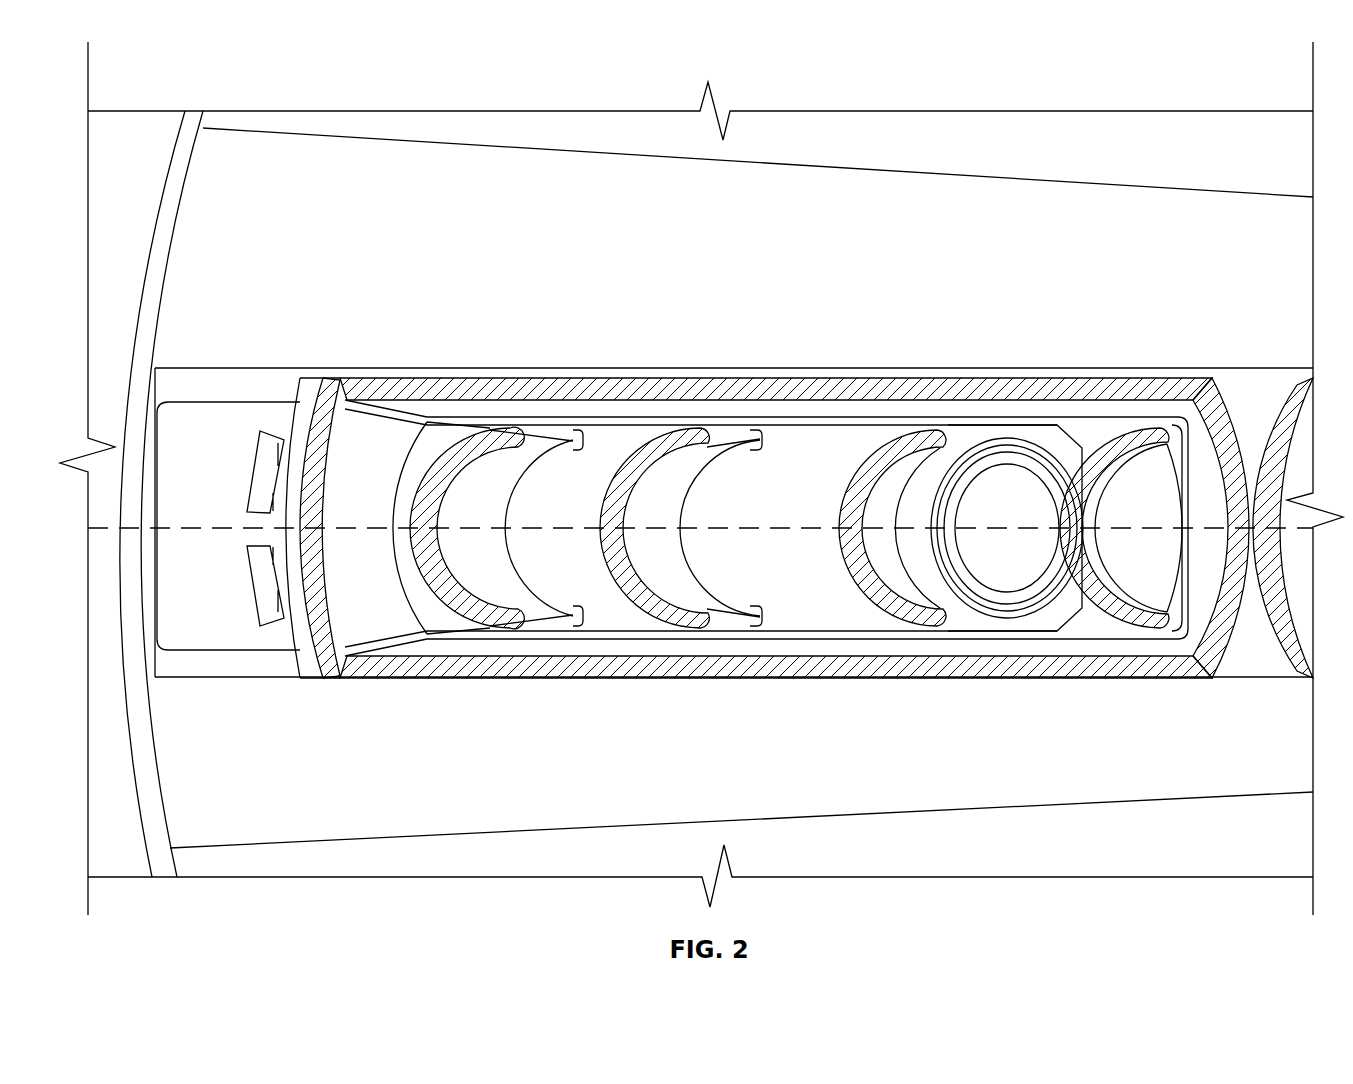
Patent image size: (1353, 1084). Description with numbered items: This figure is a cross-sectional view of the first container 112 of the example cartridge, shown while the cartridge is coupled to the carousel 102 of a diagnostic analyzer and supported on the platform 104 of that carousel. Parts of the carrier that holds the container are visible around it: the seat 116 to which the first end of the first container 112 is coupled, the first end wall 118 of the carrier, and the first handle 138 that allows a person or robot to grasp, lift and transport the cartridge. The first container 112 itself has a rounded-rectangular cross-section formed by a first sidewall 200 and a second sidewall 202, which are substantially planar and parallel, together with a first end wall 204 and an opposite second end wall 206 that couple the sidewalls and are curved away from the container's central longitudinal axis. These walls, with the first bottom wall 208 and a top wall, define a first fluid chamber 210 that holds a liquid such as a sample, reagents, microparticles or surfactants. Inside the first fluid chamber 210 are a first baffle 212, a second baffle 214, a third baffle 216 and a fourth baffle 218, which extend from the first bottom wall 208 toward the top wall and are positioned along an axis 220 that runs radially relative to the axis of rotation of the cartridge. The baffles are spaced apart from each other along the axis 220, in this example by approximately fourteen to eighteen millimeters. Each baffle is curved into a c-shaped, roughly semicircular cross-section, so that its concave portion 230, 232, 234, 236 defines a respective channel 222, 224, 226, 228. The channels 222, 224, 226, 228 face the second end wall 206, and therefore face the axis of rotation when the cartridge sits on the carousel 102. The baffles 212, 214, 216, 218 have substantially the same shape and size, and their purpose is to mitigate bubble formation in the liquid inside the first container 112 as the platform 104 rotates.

The carousel 102 is at (194, 118).
The platform 104 is at (722, 212).
The first container 112 is at (485, 355).
The seat 116 is at (1255, 650).
The first end wall 118 is at (307, 657).
The first handle 138 is at (232, 425).
The first sidewall 200 is at (668, 378).
The second sidewall 202 is at (760, 678).
The first end wall 204 is at (328, 412).
The second end wall 206 is at (1238, 420).
The first bottom wall 208 is at (775, 610).
The first fluid chamber 210 is at (808, 452).
The first baffle 212 is at (507, 623).
The second baffle 214 is at (690, 623).
The third baffle 216 is at (935, 622).
The fourth baffle 218 is at (1155, 618).
The axis 220 is at (180, 534).
The channel 222 is at (540, 485).
The channel 224 is at (725, 493).
The channel 226 is at (932, 490).
The channel 228 is at (1150, 488).
The concave portion 230 is at (507, 592).
The concave portion 232 is at (682, 582).
The concave portion 234 is at (903, 584).
The concave portion 236 is at (1097, 570).